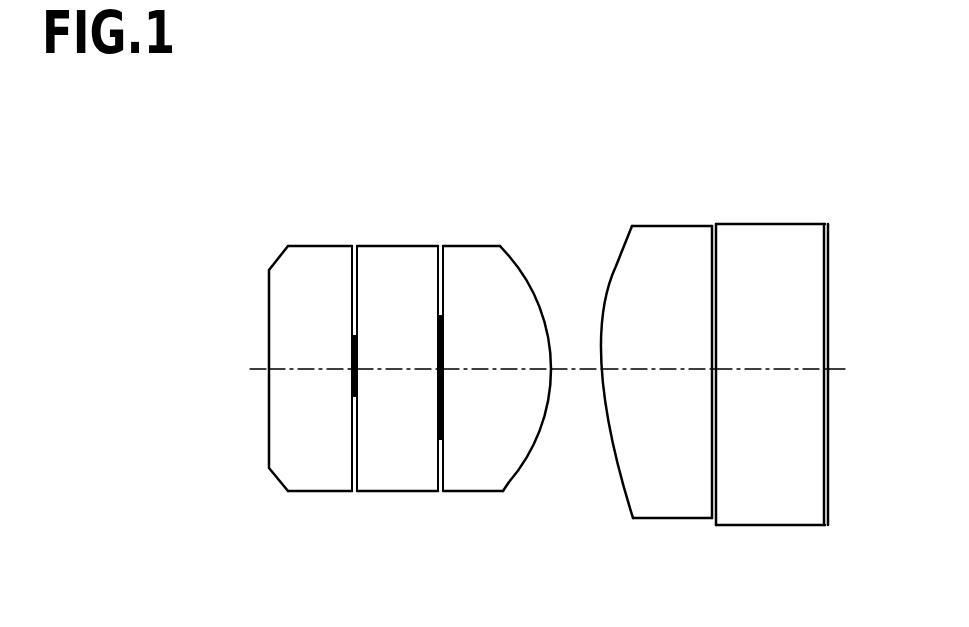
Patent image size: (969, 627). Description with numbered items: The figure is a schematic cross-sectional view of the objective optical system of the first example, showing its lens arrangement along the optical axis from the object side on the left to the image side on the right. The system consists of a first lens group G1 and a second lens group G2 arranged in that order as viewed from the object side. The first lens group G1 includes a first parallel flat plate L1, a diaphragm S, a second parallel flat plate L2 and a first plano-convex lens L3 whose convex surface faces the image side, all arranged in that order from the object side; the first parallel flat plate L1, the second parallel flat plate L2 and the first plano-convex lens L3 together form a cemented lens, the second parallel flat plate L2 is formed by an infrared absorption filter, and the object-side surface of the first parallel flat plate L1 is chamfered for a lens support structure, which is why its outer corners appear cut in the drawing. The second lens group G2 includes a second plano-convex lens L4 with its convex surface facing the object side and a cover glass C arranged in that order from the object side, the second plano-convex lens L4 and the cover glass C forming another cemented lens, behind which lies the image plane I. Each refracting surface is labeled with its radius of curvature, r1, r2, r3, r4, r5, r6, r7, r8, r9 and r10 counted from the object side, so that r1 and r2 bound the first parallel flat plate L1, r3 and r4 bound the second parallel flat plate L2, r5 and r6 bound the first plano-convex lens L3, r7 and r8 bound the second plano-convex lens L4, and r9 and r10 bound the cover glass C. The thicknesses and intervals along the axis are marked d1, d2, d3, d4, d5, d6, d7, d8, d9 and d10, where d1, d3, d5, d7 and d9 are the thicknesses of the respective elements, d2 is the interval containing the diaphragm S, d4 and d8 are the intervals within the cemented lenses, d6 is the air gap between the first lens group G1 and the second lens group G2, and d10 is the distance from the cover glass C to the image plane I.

The first lens group G1 is at (556, 172).
The second lens group G2 is at (825, 133).
The first parallel flat plate L1 is at (292, 314).
The second parallel flat plate L2 is at (356, 172).
The first plano-convex lens L3 is at (438, 172).
The second plano-convex lens L4 is at (656, 330).
The cover glass C is at (770, 333).
The diaphragm S is at (357, 395).
The image plane I is at (829, 474).
The radius of curvature of lens surface r1 is at (262, 268).
The radius of curvature of lens surface r2 is at (350, 290).
The radius of curvature of lens surface r3 is at (362, 295).
The radius of curvature of lens surface r4 is at (432, 287).
The radius of curvature of lens surface r5 is at (446, 283).
The radius of curvature of lens surface r6 is at (518, 264).
The radius of curvature of lens surface r7 is at (612, 268).
The radius of curvature of lens surface r8 is at (708, 272).
The radius of curvature of lens surface r9 is at (718, 272).
The radius of curvature of lens surface r10 is at (820, 272).
The thickness or interval of lens surfaces d1 is at (310, 384).
The thickness or interval of lens surfaces d2 is at (350, 397).
The thickness or interval of lens surfaces d3 is at (397, 384).
The thickness or interval of lens surfaces d4 is at (440, 447).
The thickness or interval of lens surfaces d5 is at (497, 384).
The thickness or interval of lens surfaces d6 is at (576, 384).
The thickness or interval of lens surfaces d7 is at (657, 384).
The thickness or interval of lens surfaces d8 is at (707, 520).
The thickness or interval of lens surfaces d9 is at (770, 384).
The thickness or interval of lens surfaces d10 is at (818, 520).